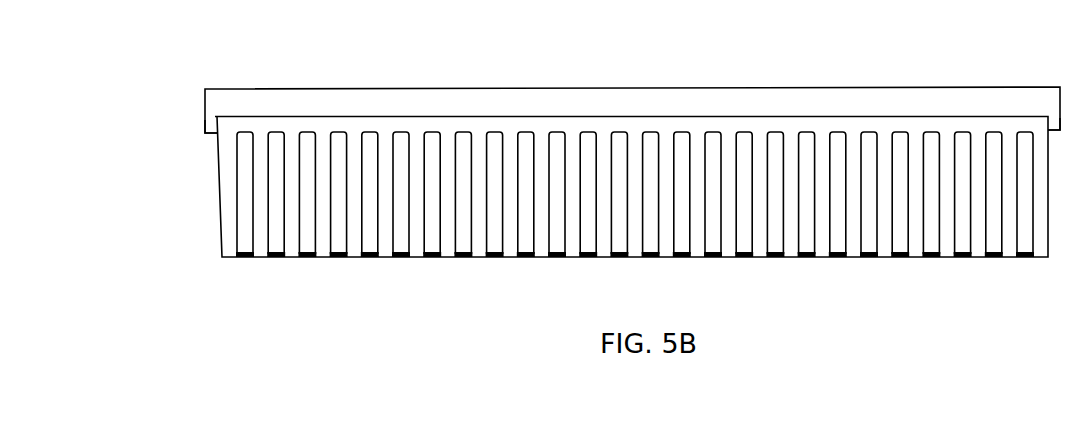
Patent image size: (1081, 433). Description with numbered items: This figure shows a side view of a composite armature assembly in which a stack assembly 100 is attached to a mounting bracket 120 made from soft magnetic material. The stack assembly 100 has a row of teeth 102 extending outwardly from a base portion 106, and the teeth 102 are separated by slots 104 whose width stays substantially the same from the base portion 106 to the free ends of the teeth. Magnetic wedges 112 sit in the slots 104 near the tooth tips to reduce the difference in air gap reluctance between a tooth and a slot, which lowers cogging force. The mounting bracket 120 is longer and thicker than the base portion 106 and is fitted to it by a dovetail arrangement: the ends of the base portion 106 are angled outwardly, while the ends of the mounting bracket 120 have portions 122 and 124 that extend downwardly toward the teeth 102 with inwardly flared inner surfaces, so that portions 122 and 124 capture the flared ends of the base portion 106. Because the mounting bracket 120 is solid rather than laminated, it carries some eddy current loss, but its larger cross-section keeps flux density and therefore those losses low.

The stack assembly 100 is at (221, 200).
The teeth 102 is at (223, 233).
The slots 104 is at (1027, 209).
The base portion 106 is at (355, 131).
The magnetic wedges 112 is at (405, 259).
The mounting bracket 120 is at (520, 86).
The end portion of mounting bracket 122 is at (205, 125).
The end portion of mounting bracket 124 is at (1055, 120).